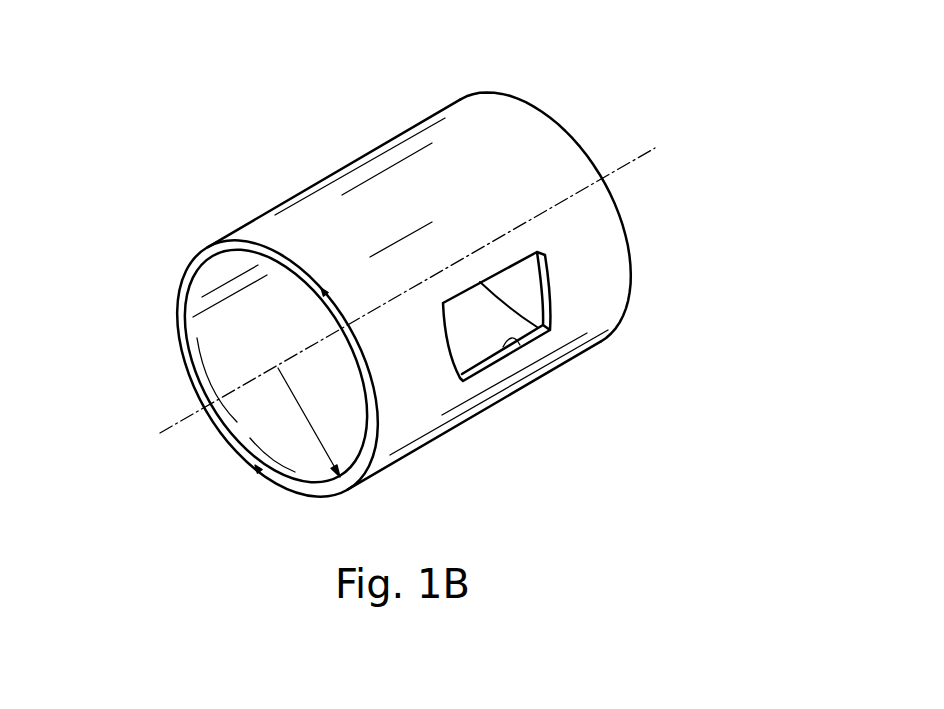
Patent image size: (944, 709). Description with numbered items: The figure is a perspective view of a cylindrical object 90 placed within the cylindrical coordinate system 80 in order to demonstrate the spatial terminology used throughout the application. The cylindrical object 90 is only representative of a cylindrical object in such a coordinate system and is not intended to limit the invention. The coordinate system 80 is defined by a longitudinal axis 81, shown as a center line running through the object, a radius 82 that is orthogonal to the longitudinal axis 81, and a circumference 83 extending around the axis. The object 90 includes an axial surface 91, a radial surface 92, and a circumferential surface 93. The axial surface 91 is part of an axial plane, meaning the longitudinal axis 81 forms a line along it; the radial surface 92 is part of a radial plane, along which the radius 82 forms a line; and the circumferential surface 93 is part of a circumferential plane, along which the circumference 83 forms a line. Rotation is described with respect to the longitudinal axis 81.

The cylindrical coordinate system 80 is at (580, 129).
The longitudinal axis 81 is at (160, 434).
The radius 82 is at (300, 440).
The circumference 83 is at (183, 273).
The cylindrical object 90 is at (457, 98).
The axial surface 91 is at (522, 342).
The radial surface 92 is at (257, 470).
The circumferential surface 93 is at (368, 193).